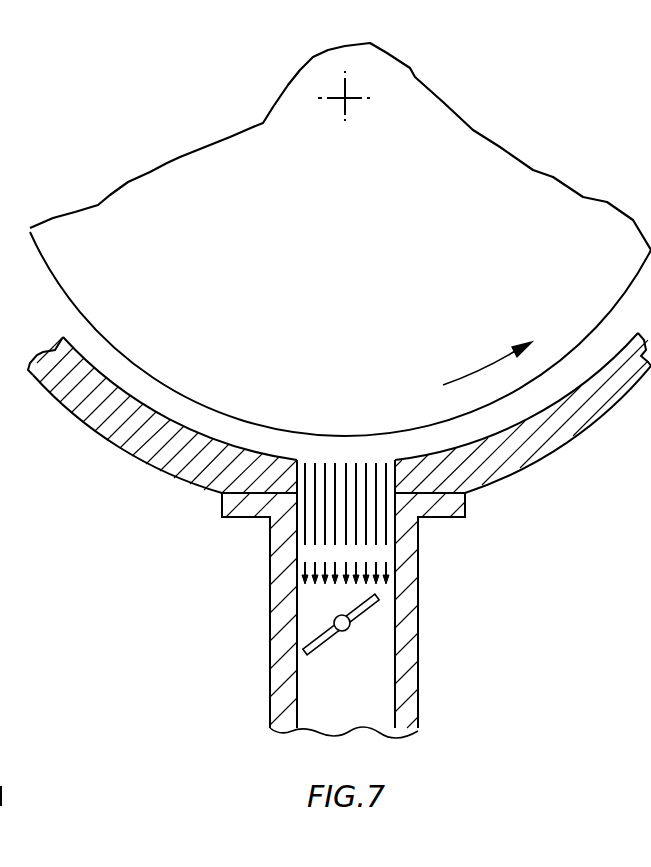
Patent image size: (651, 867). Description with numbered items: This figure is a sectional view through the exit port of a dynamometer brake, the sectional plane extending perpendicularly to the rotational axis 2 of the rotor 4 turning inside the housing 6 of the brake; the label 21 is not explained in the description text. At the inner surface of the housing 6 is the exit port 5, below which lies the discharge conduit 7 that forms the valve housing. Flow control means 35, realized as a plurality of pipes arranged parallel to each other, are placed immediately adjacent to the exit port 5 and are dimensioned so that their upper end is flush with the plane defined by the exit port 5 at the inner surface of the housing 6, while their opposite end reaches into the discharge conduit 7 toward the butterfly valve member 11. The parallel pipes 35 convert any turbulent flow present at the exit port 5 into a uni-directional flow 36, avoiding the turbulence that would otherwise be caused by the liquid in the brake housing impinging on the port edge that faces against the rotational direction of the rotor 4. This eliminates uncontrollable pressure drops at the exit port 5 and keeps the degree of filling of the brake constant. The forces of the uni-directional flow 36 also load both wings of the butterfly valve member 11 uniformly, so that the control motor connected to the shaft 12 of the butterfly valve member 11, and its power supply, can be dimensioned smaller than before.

The apparatus housing 21 is at (0, 127).
The rotational axis 2 is at (347, 95).
The rotor 4 is at (268, 418).
The exit port 5 is at (414, 441).
The housing 6 is at (482, 478).
The discharge conduit 7 is at (408, 549).
The flow control means 35 is at (315, 528).
The uni-directional flow 36 is at (385, 568).
The butterfly valve member 11 is at (356, 613).
The shaft 12 is at (337, 616).